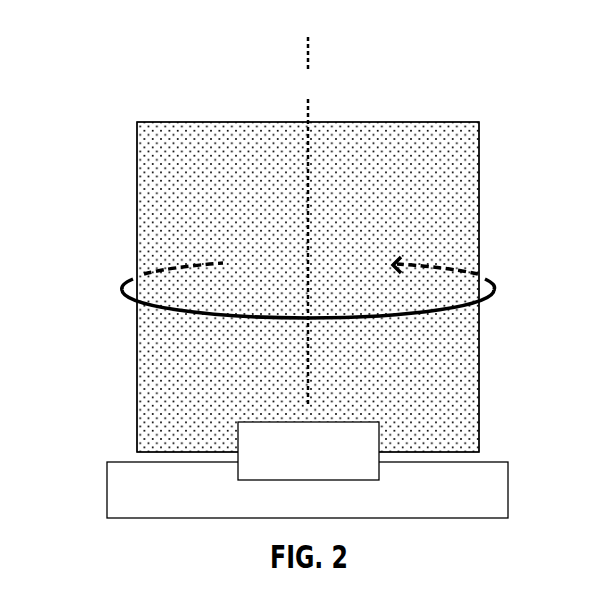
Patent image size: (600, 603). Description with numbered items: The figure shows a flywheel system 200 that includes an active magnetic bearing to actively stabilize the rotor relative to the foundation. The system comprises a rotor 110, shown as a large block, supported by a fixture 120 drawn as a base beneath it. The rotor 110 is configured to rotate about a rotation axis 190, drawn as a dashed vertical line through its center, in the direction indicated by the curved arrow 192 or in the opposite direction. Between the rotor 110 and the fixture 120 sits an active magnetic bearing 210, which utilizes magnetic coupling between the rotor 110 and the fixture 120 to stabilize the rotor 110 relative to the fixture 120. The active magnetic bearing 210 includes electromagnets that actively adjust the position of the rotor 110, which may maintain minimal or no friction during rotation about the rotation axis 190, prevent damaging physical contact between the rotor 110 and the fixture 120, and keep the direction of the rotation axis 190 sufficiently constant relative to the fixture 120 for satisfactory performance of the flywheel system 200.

The flywheel system 200 is at (88, 85).
The rotor 110 is at (180, 152).
The fixture 120 is at (150, 502).
The active magnetic bearing 210 is at (326, 462).
The rotation axis 190 is at (308, 221).
The arrow 192 is at (308, 290).